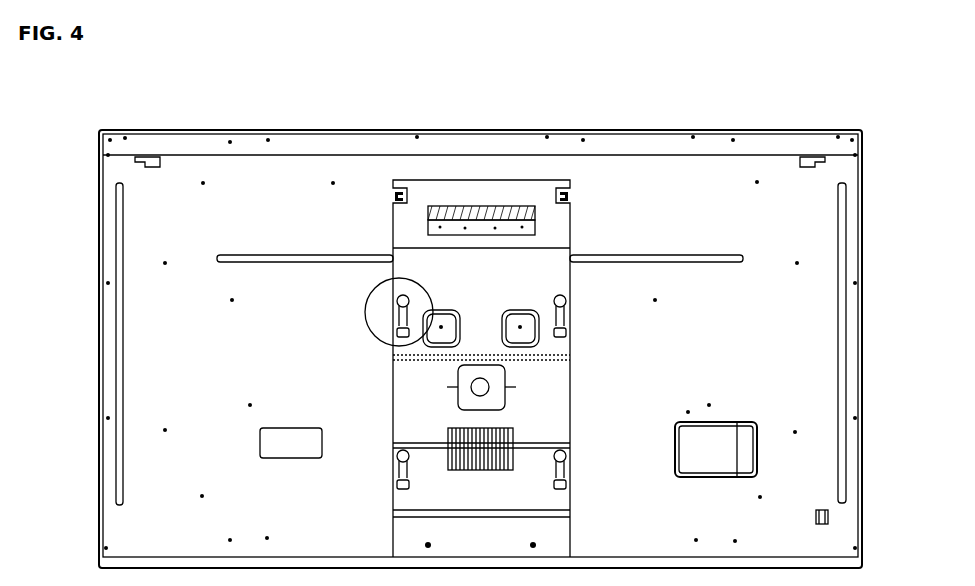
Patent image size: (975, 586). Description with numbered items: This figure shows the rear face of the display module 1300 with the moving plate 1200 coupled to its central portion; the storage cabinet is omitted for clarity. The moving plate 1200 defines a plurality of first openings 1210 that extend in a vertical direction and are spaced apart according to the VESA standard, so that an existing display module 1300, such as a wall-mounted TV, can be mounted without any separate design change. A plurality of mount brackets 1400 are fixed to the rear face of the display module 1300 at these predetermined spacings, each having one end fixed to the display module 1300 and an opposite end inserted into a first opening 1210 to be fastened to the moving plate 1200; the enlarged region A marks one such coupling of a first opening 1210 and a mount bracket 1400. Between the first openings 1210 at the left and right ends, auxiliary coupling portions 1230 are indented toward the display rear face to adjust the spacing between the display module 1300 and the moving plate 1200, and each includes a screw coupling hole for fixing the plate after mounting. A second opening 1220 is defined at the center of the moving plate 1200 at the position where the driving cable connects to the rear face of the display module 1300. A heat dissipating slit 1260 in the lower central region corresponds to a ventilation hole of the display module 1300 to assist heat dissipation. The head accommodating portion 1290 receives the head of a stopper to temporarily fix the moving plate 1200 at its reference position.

The display module 1300 is at (183, 183).
The enlarged region A is at (380, 290).
The moving plate 1200 is at (410, 185).
The head accommodating portion 1290 is at (505, 212).
The auxiliary coupling portion 1230 is at (440, 318).
The first opening 1210 is at (400, 299).
The mount bracket 1400 is at (400, 320).
The second opening 1220 is at (458, 390).
The heat dissipating slit 1260 is at (500, 427).